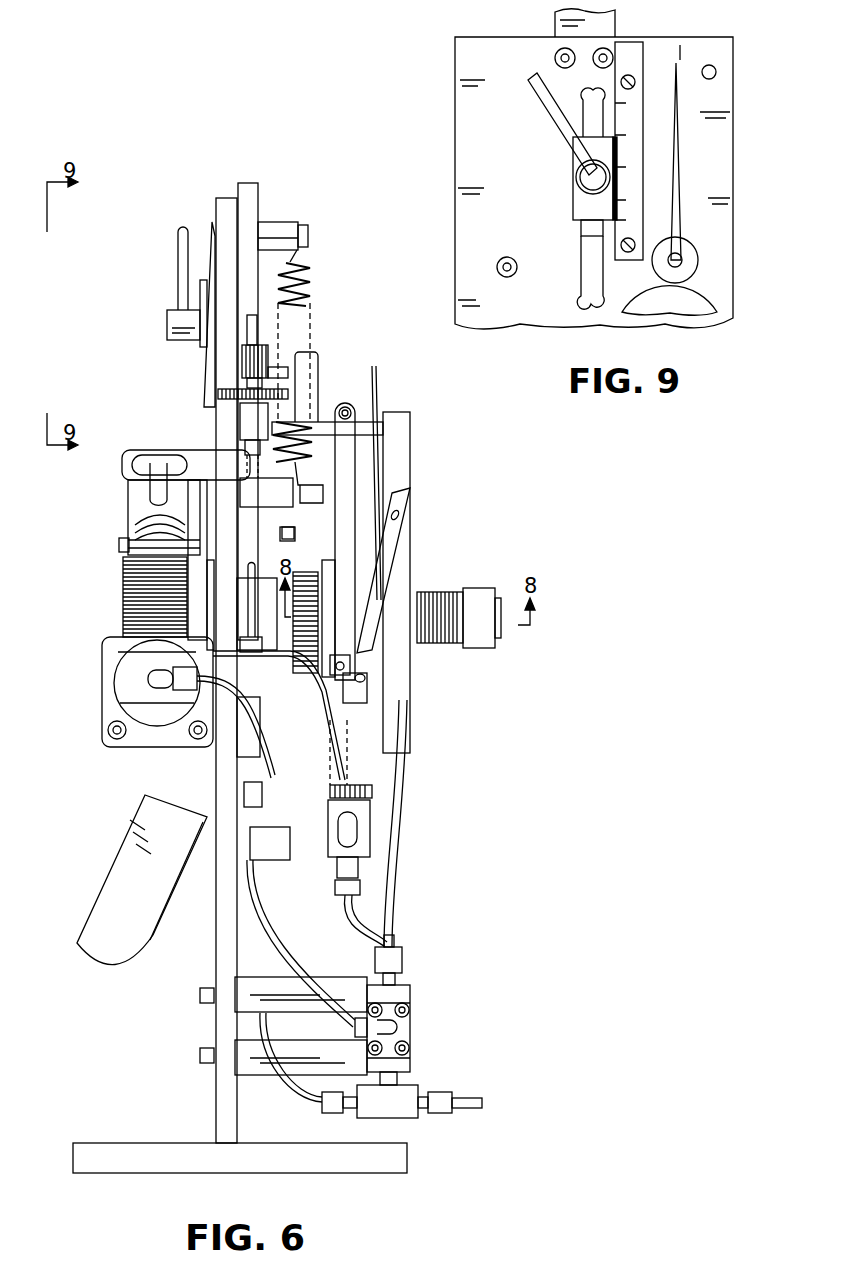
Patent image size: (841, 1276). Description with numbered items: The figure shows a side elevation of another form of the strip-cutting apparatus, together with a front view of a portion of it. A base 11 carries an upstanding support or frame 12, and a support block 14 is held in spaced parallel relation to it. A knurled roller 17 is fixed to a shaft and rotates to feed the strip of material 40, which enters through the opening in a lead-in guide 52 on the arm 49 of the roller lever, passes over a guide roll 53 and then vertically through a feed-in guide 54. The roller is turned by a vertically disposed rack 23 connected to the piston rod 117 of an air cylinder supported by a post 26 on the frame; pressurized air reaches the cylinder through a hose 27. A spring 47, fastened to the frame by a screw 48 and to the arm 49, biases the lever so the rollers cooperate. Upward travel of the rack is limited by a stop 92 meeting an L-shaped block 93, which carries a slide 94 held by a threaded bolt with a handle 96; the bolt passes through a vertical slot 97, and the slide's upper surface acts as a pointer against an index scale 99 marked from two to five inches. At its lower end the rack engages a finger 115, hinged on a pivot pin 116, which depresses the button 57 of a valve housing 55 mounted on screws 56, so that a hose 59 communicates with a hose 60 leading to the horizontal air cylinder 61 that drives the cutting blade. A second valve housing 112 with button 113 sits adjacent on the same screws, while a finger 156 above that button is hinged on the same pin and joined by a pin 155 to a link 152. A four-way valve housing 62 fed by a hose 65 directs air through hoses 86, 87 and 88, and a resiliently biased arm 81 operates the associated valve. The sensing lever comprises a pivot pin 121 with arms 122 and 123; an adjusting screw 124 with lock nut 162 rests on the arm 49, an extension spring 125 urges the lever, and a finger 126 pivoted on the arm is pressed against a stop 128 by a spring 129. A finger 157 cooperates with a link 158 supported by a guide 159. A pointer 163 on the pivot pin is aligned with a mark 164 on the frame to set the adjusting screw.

In FIG. 6, the base 11 is at (100, 1143).
In FIG. 9, the support or frame 12 is at (455, 150).
In FIG. 6, the support or frame 12 is at (216, 1015).
In FIG. 6, the support block 14 is at (410, 426).
In FIG. 6, the knurled roller 17 is at (125, 583).
In FIG. 6, the rack 23 is at (288, 552).
In FIG. 9, the post 26 is at (614, 24).
In FIG. 6, the hose 27 is at (378, 373).
In FIG. 6, the strip of material 40 is at (155, 492).
In FIG. 6, the spring 47 is at (311, 280).
In FIG. 6, the screw 48 is at (280, 222).
In FIG. 6, the arm 49 is at (247, 487).
In FIG. 6, the lead-in guide 52 is at (122, 468).
In FIG. 6, the guide roll 53 is at (140, 518).
In FIG. 6, the feed-in guide 54 is at (120, 545).
In FIG. 6, the valve housing 55 is at (262, 886).
In FIG. 6, the screws 56 is at (260, 867).
In FIG. 6, the button 57 is at (290, 870).
In FIG. 6, the hose 59 is at (363, 935).
In FIG. 6, the hose 60 is at (277, 773).
In FIG. 6, the air cylinder 61 is at (112, 703).
In FIG. 6, the valve housing 62 is at (412, 1022).
In FIG. 6, the hose 65 is at (465, 1098).
In FIG. 6, the arm 81 is at (246, 730).
In FIG. 6, the hose 86 is at (248, 595).
In FIG. 6, the hose 87 is at (266, 962).
In FIG. 6, the hose 88 is at (394, 912).
In FIG. 6, the stop 92 is at (282, 533).
In FIG. 9, the L-shaped block 93 is at (588, 231).
In FIG. 6, the L-shaped block 93 is at (272, 392).
In FIG. 9, the slide 94 is at (580, 205).
In FIG. 9, the handle 96 is at (541, 105).
In FIG. 6, the handle 96 is at (178, 252).
In FIG. 9, the vertical slot 97 is at (585, 268).
In FIG. 9, the index scale 99 is at (648, 58).
In FIG. 6, the valve housing 112 is at (373, 830).
In FIG. 6, the button 113 is at (352, 803).
In FIG. 6, the finger 115 is at (338, 892).
In FIG. 6, the pivot pin 116 is at (242, 818).
In FIG. 6, the piston rod 117 is at (319, 362).
In FIG. 9, the pivot pin 121 is at (680, 256).
In FIG. 6, the pivot pin 121 is at (325, 412).
In FIG. 6, the arm 122 is at (240, 415).
In FIG. 6, the arm 123 is at (345, 470).
In FIG. 6, the adjusting screw 124 is at (240, 360).
In FIG. 6, the extension spring 125 is at (362, 675).
In FIG. 6, the finger 126 is at (362, 502).
In FIG. 6, the stop 128 is at (377, 546).
In FIG. 6, the spring 129 is at (385, 562).
In FIG. 6, the link 152 is at (397, 767).
In FIG. 6, the pin 155 is at (372, 793).
In FIG. 6, the finger 156 is at (362, 776).
In FIG. 6, the finger 157 is at (230, 647).
In FIG. 6, the link 158 is at (345, 724).
In FIG. 6, the guide 159 is at (352, 700).
In FIG. 6, the lock nut 162 is at (230, 390).
In FIG. 9, the pointer 163 is at (680, 158).
In FIG. 6, the pointer 163 is at (212, 232).
In FIG. 9, the mark 164 is at (682, 46).